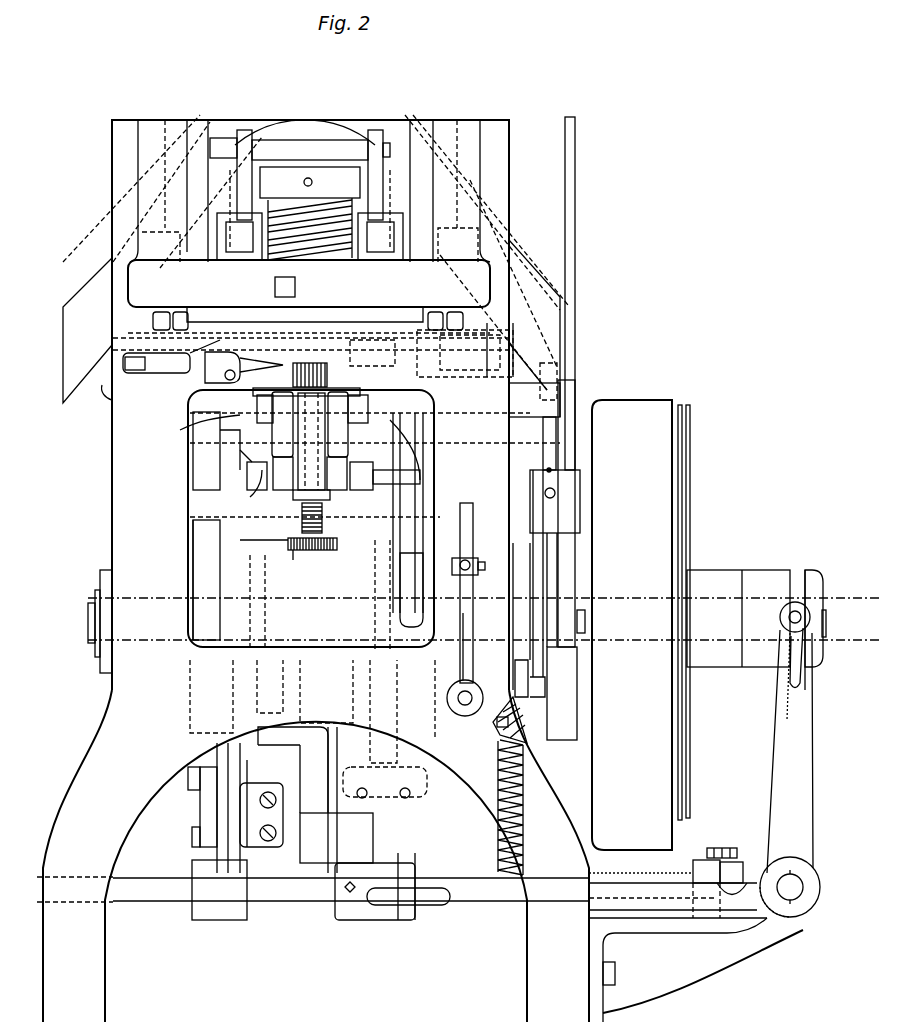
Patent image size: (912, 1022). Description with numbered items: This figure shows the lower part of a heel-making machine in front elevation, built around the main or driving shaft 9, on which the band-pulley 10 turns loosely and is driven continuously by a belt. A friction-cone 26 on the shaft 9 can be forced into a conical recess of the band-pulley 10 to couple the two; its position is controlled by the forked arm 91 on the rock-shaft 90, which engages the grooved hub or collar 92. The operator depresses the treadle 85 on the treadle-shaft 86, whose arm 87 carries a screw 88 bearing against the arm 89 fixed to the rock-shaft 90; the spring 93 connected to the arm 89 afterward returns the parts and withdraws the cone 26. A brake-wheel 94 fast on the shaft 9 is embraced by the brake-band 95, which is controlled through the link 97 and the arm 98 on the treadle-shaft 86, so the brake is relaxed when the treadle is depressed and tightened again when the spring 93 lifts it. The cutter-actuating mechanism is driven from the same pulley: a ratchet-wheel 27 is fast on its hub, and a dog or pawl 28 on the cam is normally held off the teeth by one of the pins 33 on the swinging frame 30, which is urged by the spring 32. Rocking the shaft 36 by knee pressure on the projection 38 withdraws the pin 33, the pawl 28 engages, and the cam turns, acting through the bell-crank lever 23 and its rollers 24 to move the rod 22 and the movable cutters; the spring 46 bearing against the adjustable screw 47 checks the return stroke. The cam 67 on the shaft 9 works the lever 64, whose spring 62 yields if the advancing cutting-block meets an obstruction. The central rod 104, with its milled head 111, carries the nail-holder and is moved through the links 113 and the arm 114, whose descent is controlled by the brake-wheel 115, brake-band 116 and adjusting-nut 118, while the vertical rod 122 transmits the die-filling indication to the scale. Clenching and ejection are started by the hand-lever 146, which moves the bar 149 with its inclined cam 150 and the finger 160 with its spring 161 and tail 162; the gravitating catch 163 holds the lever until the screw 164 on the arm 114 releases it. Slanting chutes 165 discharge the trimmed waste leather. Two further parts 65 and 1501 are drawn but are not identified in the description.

The main or driving shaft 9 is at (88, 621).
The band-pulley 10 is at (625, 400).
The connecting-rod 22 is at (577, 232).
The cam-operated lever 23 is at (600, 543).
The rollers 24 is at (565, 617).
The friction-cone 26 is at (690, 405).
The ratchet-wheel 27 is at (540, 625).
The dog or pawl 28 is at (535, 551).
The frame 30 is at (465, 625).
The spring 32 is at (463, 613).
The pins 33 is at (537, 695).
The shaft 36 is at (458, 700).
The projection 38 is at (462, 560).
The spring 46 is at (557, 432).
The screw 47 is at (560, 365).
The spring 62 is at (255, 762).
The lever 64 is at (413, 527).
The lever 65 is at (384, 590).
The cam 67 is at (320, 595).
The treadle 85 is at (430, 906).
The treadle-shaft 86 is at (293, 903).
The arm 87 is at (738, 865).
The screw 88 is at (722, 848).
The arm 89 is at (660, 900).
The rock-shaft 90 is at (793, 890).
The forked arm 91 is at (790, 734).
The hub or collar 92 is at (768, 570).
The spring 93 is at (525, 822).
The brake-wheel 94 is at (188, 541).
The brake-band 95 is at (207, 561).
The link 97 is at (207, 800).
The arm 98 is at (233, 804).
The central rod 104 is at (323, 518).
The milled head 111 is at (290, 550).
The links 113 is at (340, 458).
The arm 114 is at (200, 420).
The brake-wheel 115 is at (207, 480).
The brake-band 116 is at (247, 458).
The adjusting-nut 118 is at (397, 470).
The vertical rod 122 is at (436, 398).
The hand-operated lever 146 is at (105, 385).
The bar 149 is at (205, 340).
The inclined cam 150 is at (291, 306).
The bracket 1501 is at (482, 338).
The finger 160 is at (273, 440).
The spring 161 is at (215, 372).
The tail 162 is at (270, 350).
The gravitating catch 163 is at (128, 360).
The adjustable screw 164 is at (215, 384).
The slanting chutes 165 is at (93, 267).